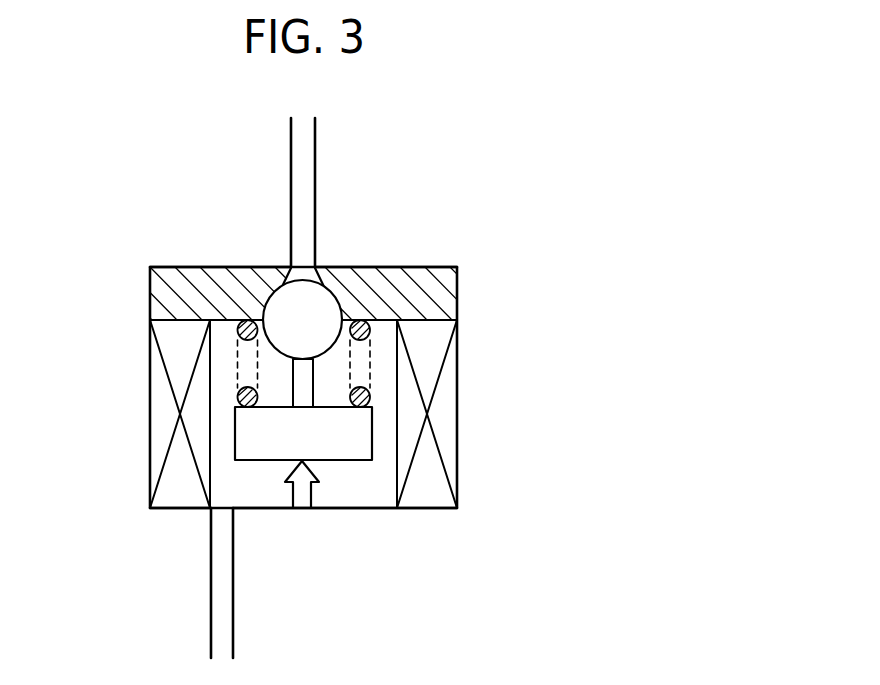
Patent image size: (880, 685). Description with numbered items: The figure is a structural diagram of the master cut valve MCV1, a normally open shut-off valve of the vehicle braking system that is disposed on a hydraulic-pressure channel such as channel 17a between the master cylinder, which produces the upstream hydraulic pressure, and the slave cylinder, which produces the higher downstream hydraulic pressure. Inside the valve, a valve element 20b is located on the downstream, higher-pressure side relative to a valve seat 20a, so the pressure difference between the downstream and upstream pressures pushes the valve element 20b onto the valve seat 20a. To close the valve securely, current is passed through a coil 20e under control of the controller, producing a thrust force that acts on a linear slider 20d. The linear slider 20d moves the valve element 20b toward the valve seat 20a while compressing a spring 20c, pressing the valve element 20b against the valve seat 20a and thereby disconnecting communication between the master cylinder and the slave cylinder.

The master cut valve MCV1 is at (172, 267).
The first-hydraulic-pressure-system hydraulic-pressure channel 17a is at (318, 143).
The valve seat 20a is at (449, 292).
The valve element 20b is at (317, 333).
The spring 20c is at (243, 326).
The linear slider 20d is at (245, 433).
The coil 20e is at (438, 447).